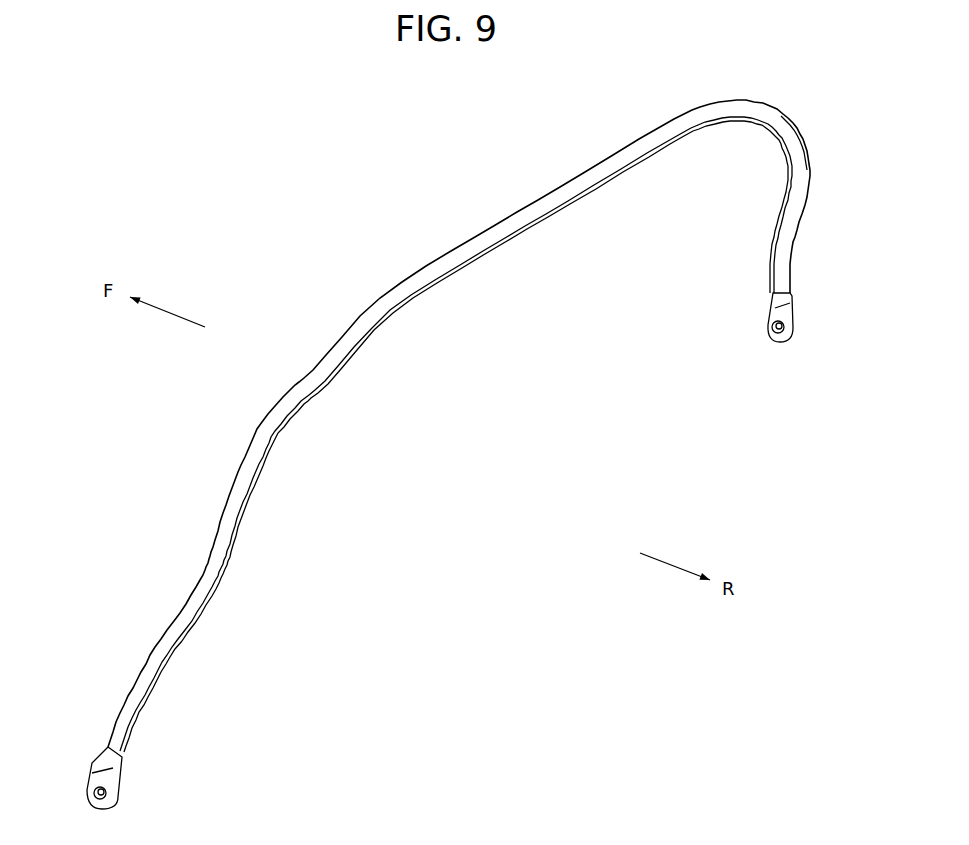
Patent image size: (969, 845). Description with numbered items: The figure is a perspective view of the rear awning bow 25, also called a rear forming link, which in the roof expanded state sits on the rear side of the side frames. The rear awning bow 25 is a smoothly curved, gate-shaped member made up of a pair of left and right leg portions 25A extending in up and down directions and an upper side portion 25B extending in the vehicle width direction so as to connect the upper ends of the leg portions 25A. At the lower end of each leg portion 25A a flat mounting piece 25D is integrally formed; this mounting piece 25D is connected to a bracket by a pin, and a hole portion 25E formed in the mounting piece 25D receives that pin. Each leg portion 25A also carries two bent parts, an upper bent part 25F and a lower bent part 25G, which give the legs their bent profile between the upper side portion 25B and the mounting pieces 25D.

The rear awning bow 25 is at (378, 297).
The leg portion 25A is at (208, 606).
The upper side portion 25B is at (473, 238).
The mounting piece 25D is at (90, 773).
The hole portion 25E is at (118, 793).
The upper bent part 25F is at (220, 562).
The lower bent part 25G is at (147, 658).